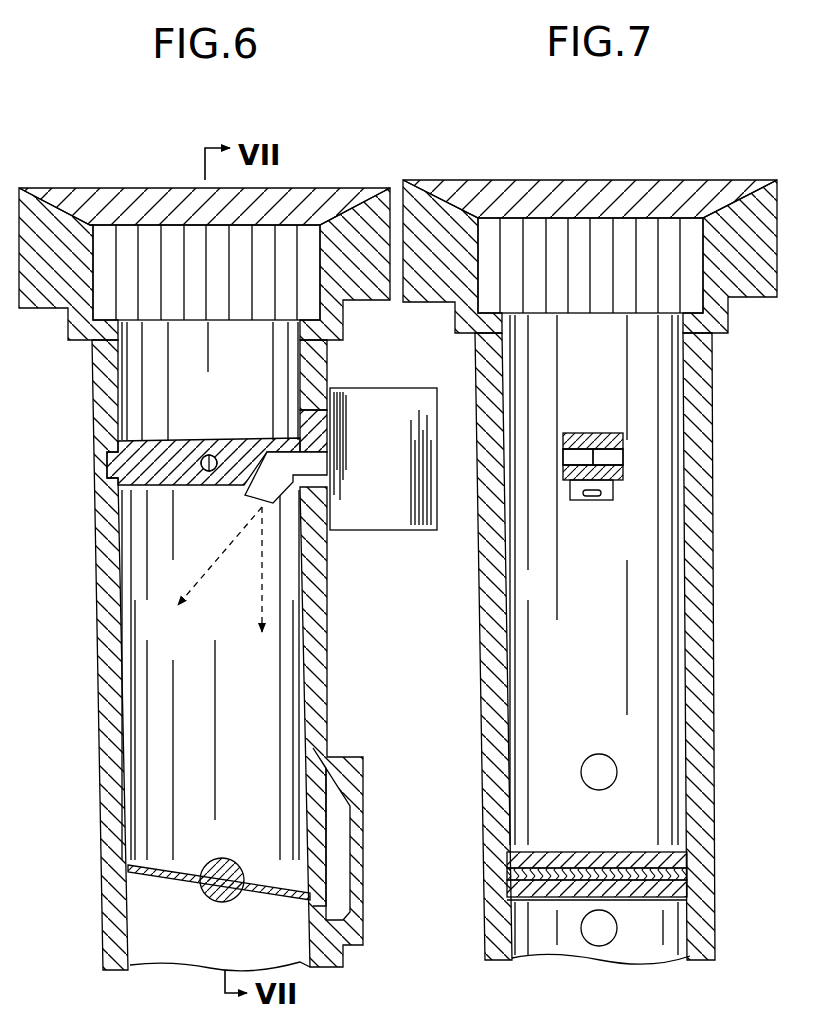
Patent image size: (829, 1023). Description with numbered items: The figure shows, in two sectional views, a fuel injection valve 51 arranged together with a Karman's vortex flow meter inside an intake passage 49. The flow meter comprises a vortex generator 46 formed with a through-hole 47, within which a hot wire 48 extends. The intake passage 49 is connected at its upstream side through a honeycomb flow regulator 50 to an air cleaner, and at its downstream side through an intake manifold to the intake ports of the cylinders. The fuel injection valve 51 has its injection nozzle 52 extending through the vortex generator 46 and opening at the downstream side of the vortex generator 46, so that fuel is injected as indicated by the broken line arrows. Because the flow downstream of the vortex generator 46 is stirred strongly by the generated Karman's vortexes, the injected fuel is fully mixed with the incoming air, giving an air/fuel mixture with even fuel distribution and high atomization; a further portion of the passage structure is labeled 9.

In FIG. 6, the bracket / flange portion of tube 9 is at (337, 862).
In FIG. 6, the vortex generator 46 is at (185, 442).
In FIG. 7, the vortex generator 46 is at (613, 433).
In FIG. 6, the through-hole 47 is at (203, 471).
In FIG. 7, the through-hole 47 is at (620, 458).
In FIG. 6, the hot wire 48 is at (211, 471).
In FIG. 7, the hot wire 48 is at (580, 457).
In FIG. 6, the intake passage 49 is at (98, 742).
In FIG. 7, the intake passage 49 is at (478, 678).
In FIG. 6, the honeycomb flow regulator 50 is at (148, 232).
In FIG. 7, the honeycomb flow regulator 50 is at (536, 220).
In FIG. 6, the fuel injection valve 51 is at (390, 527).
In FIG. 6, the injection nozzle 52 is at (268, 508).
In FIG. 7, the injection nozzle 52 is at (592, 500).